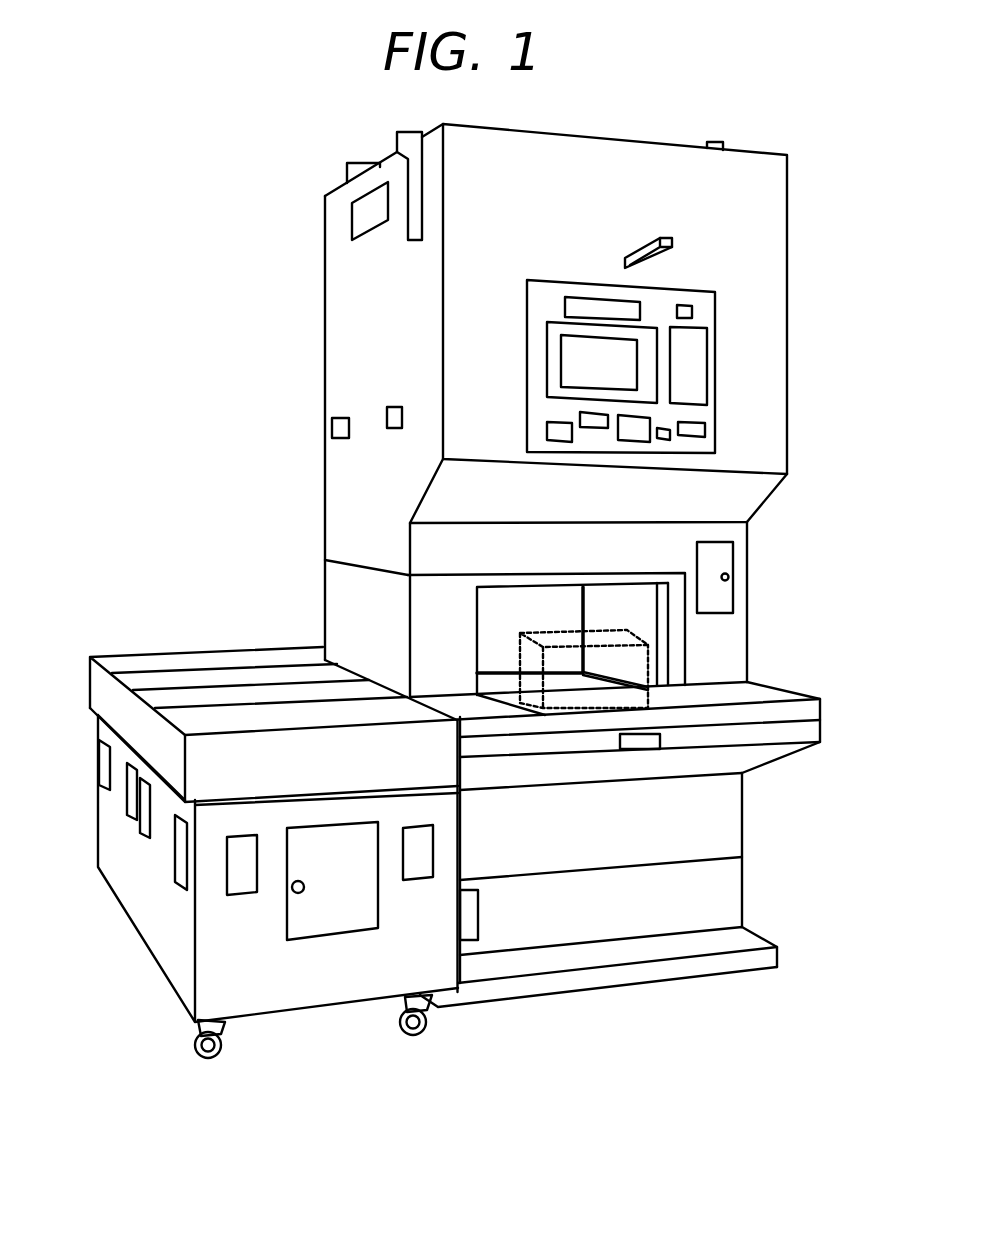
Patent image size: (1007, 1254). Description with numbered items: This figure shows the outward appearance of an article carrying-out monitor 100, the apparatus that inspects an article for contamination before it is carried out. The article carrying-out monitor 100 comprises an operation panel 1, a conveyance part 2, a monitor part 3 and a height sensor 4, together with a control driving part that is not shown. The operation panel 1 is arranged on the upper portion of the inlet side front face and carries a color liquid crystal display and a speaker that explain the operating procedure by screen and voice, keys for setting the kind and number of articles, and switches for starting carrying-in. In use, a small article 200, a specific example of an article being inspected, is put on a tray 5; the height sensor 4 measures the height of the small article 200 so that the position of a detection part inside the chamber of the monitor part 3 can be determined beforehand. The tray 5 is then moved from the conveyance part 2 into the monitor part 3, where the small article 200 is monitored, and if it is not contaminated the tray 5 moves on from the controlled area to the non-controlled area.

The article carrying-out monitor 100 is at (866, 1108).
The operation panel 1 is at (537, 355).
The conveyance part 2 is at (275, 697).
The monitor part 3 is at (522, 618).
The small article 200 is at (533, 658).
The height sensor 4 is at (642, 248).
The tray 5 is at (677, 699).